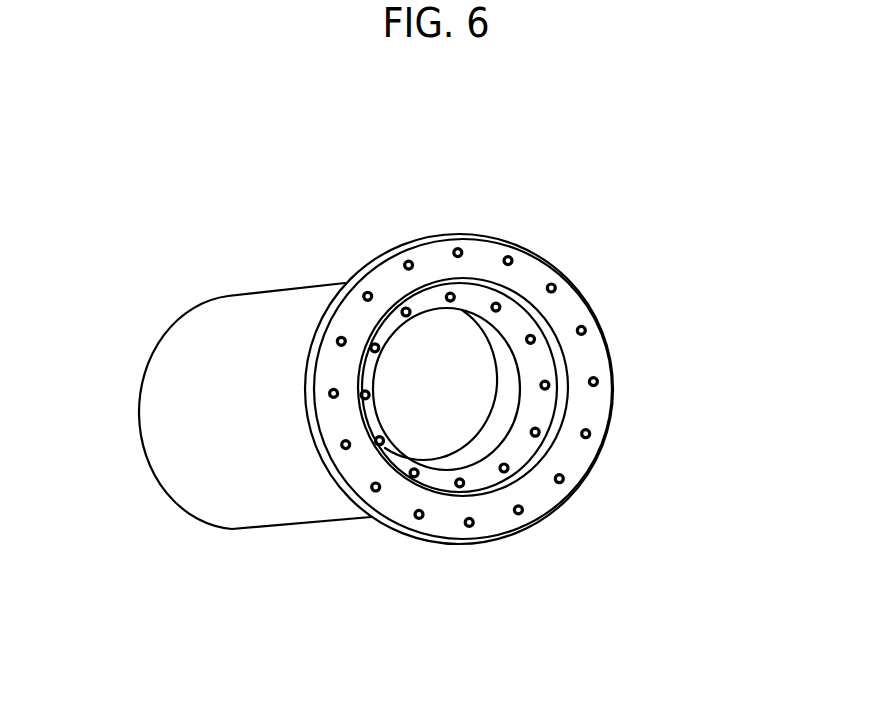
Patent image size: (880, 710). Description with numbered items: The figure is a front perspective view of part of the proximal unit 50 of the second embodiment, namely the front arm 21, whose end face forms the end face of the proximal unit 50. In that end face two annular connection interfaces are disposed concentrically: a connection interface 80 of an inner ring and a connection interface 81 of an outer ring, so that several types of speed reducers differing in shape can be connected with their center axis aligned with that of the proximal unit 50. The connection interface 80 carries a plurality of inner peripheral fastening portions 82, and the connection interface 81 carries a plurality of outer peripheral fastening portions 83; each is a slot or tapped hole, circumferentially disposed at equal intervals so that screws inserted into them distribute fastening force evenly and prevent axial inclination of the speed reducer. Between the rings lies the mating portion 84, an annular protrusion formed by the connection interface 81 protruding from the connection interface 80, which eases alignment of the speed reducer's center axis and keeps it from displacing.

The proximal unit 50 is at (628, 158).
The front arm 21 is at (275, 325).
The connection interface 81 is at (563, 313).
The mating portion 84 is at (558, 363).
The connection interface 80 is at (547, 403).
The outer peripheral fastening portions 83 is at (343, 445).
The inner peripheral fastening portions 82 is at (405, 473).